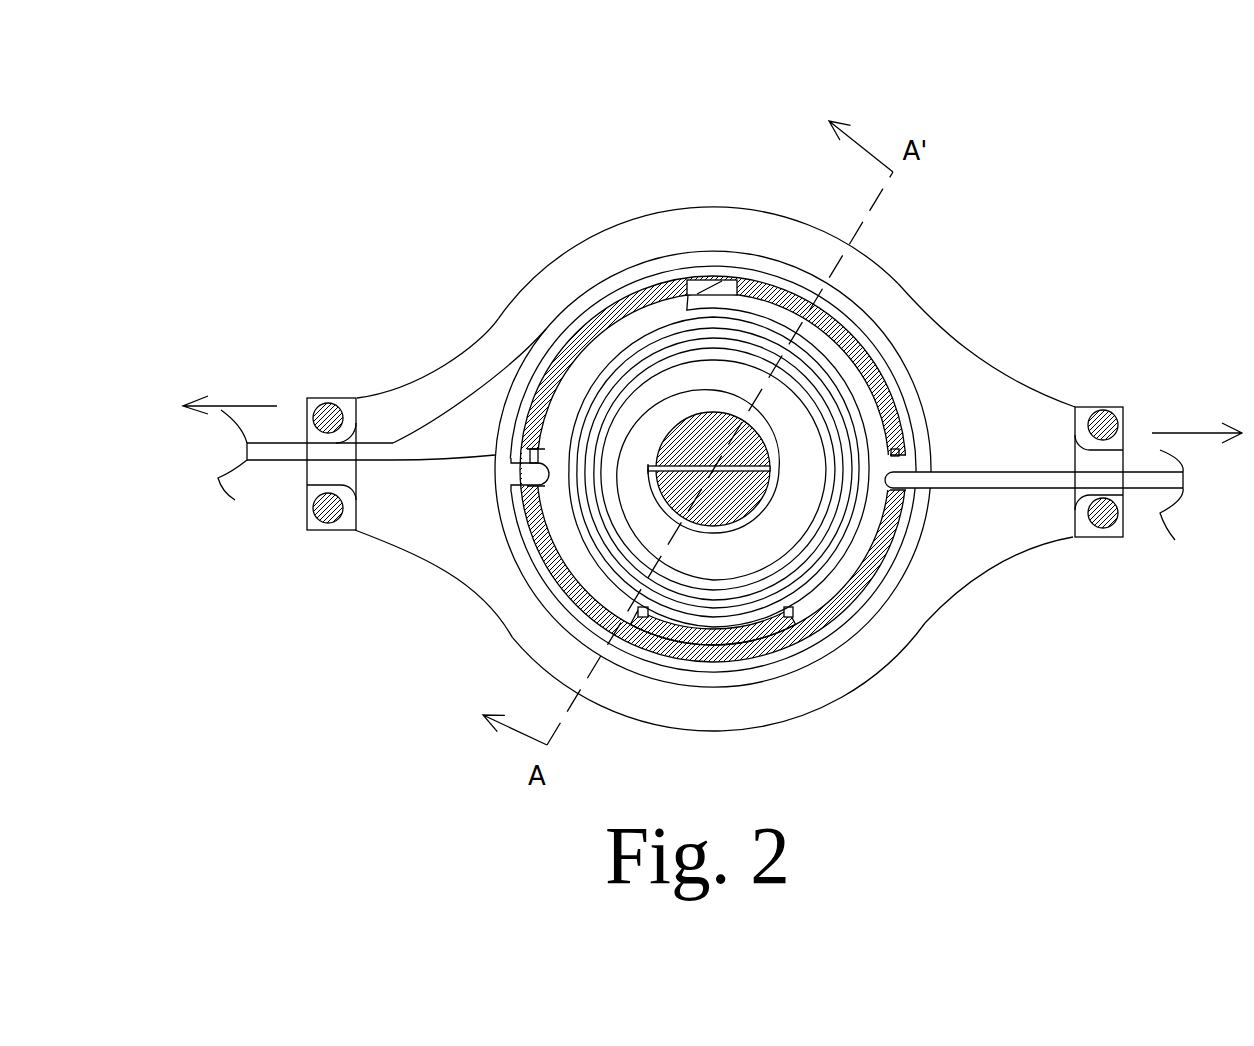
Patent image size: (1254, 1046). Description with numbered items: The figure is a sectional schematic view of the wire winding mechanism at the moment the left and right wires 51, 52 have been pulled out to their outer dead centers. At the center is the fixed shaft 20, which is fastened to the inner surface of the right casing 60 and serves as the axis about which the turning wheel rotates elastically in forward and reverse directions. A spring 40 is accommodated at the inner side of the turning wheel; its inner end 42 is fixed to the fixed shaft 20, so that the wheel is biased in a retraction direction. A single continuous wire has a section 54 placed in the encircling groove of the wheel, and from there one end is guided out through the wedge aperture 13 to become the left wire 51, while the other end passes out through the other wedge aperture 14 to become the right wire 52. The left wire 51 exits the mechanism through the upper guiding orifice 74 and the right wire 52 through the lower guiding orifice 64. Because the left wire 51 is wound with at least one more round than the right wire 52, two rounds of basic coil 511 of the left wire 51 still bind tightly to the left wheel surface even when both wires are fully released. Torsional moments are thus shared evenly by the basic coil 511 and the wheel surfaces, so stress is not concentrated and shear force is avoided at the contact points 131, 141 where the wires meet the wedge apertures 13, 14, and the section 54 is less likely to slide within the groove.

The wedge aperture 13 is at (530, 452).
The contact point 131 is at (530, 478).
The wedge aperture 14 is at (900, 477).
The contact point 141 is at (893, 483).
The fixed shaft 20 is at (698, 452).
The spring 40 is at (845, 345).
The inner end 42 is at (773, 504).
The left wire 51 is at (333, 453).
The basic coil 511 is at (533, 567).
The right wire 52 is at (1013, 467).
The section 54 is at (733, 640).
The right casing 60 is at (933, 353).
The lower guiding orifice 64 is at (1115, 450).
The upper guiding orifice 74 is at (325, 472).